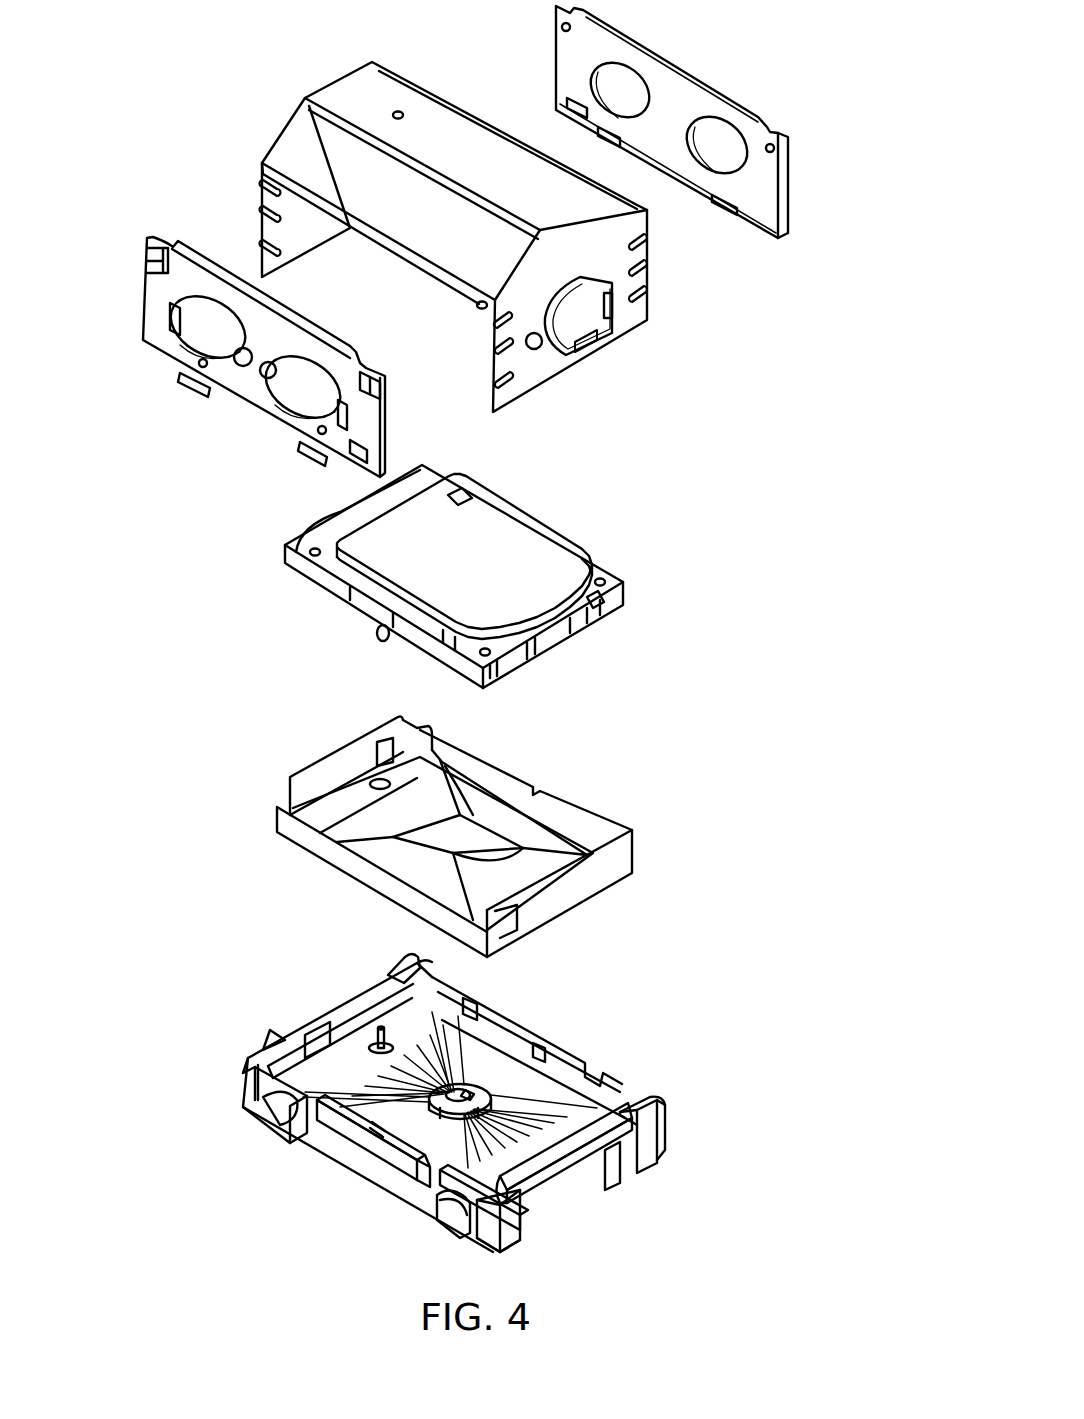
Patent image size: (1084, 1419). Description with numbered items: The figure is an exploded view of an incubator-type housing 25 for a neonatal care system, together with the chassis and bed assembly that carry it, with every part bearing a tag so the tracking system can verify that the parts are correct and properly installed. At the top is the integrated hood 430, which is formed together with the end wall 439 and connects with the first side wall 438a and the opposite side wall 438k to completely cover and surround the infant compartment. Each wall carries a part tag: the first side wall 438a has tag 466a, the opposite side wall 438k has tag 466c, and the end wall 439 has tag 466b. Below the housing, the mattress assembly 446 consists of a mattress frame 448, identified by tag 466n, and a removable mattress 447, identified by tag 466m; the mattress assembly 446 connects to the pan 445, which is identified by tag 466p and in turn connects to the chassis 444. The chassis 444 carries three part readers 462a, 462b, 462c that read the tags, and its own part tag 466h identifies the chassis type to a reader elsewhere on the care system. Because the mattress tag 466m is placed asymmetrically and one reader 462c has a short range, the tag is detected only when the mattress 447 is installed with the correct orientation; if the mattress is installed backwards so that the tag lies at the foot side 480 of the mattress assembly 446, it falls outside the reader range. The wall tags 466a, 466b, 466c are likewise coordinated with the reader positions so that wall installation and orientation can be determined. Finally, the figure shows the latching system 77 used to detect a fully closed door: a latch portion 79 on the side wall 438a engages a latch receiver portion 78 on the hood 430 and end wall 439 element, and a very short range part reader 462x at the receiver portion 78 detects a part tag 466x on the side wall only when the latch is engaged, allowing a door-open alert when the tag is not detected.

The housing 25 is at (828, 114).
The latching system 77 is at (248, 193).
The latch receiver portion 78 is at (293, 210).
The latch portion 79 is at (147, 245).
The integrated hood 430 is at (350, 83).
The first side wall 438a is at (270, 400).
The second side wall 438k is at (686, 97).
The integrated end wall 439 is at (623, 327).
The chassis 444 is at (630, 1080).
The pan 445 is at (593, 823).
The mattress assembly 446 is at (607, 567).
The mattress 447 is at (563, 548).
The mattress frame 448 is at (302, 560).
The part reader 462a is at (532, 1208).
The part reader 462b is at (470, 1087).
The part reader 462c is at (390, 968).
The part reader 462x is at (262, 165).
The part tag 466a is at (350, 460).
The part tag 466b is at (597, 350).
The part tag 466c is at (567, 100).
The part tag 466h is at (317, 1040).
The part tag 466m is at (467, 485).
The part tag 466n is at (600, 613).
The part tag 466p is at (383, 752).
The part tag 466x is at (150, 270).
The foot side 480 is at (557, 630).